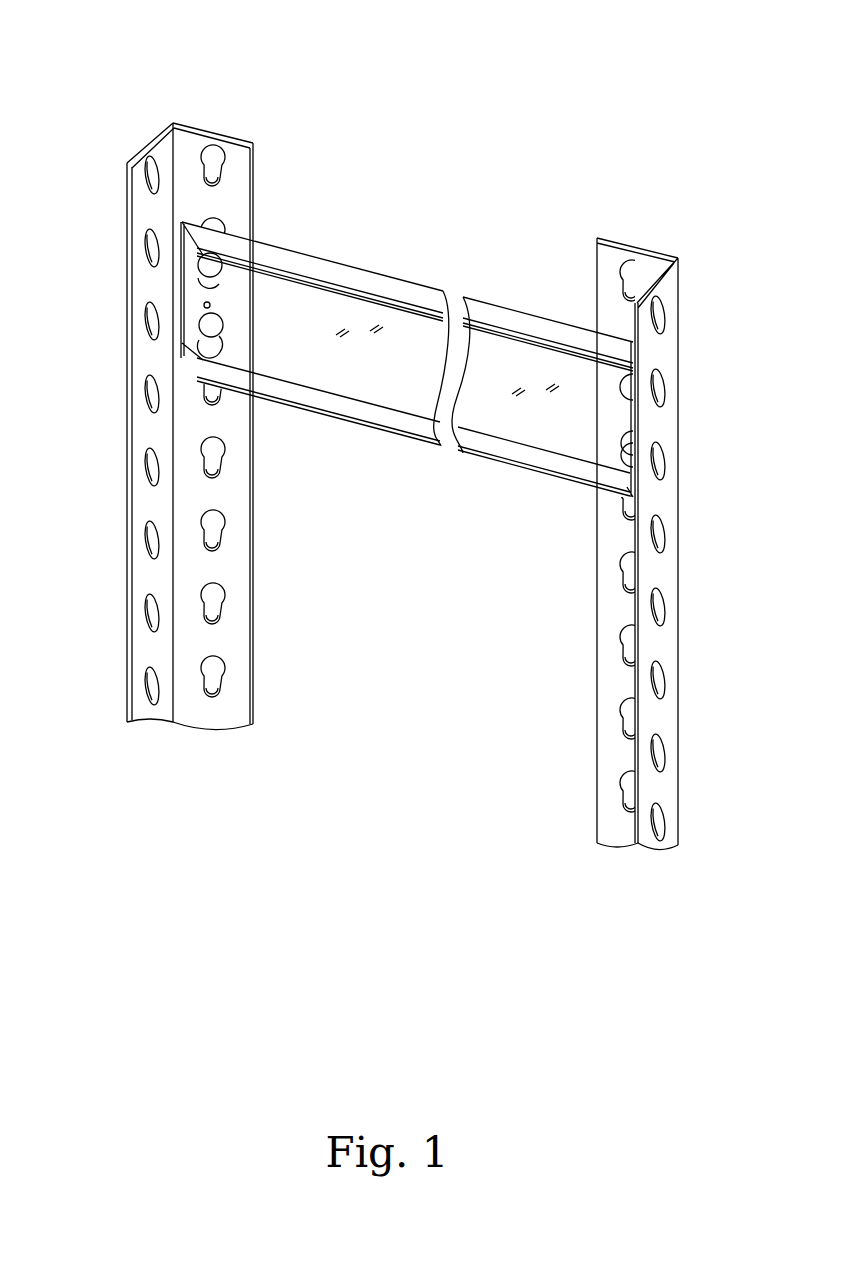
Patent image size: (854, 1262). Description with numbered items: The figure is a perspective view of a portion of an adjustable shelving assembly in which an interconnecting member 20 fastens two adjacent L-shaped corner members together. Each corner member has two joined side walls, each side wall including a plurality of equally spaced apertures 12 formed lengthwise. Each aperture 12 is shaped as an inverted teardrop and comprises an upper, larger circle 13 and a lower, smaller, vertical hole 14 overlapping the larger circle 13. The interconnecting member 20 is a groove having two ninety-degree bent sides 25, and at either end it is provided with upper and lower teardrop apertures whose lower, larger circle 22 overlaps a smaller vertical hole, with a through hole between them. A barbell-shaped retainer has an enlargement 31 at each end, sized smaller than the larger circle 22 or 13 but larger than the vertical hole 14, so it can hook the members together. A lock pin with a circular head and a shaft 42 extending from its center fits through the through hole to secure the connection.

The aperture 12 is at (215, 125).
The larger circle 13 is at (660, 370).
The vertical hole 14 is at (660, 402).
The interconnecting member 20 is at (349, 338).
The larger circle 22 is at (215, 345).
The bent side 25 is at (511, 318).
The enlargement 31 is at (213, 327).
The shaft 42 is at (204, 303).